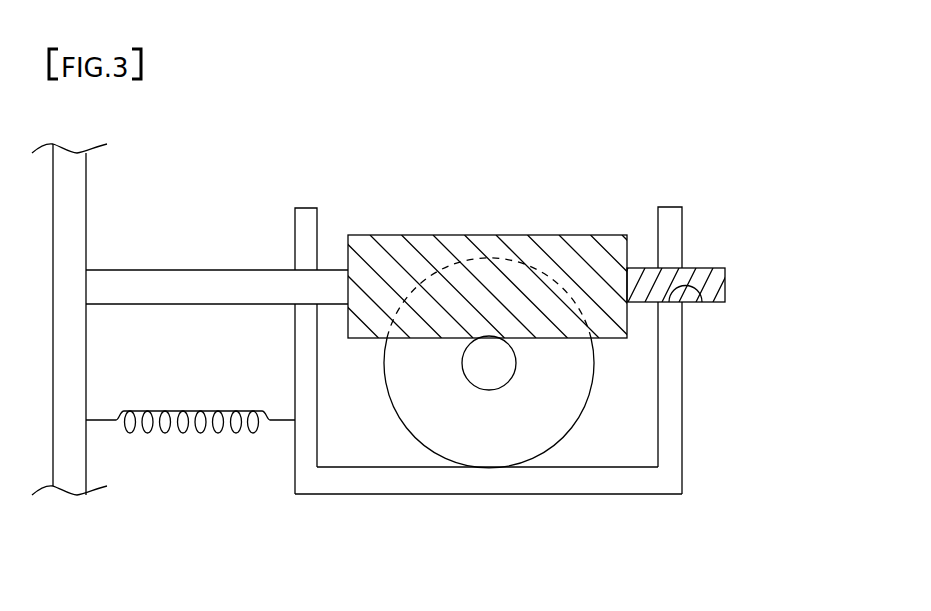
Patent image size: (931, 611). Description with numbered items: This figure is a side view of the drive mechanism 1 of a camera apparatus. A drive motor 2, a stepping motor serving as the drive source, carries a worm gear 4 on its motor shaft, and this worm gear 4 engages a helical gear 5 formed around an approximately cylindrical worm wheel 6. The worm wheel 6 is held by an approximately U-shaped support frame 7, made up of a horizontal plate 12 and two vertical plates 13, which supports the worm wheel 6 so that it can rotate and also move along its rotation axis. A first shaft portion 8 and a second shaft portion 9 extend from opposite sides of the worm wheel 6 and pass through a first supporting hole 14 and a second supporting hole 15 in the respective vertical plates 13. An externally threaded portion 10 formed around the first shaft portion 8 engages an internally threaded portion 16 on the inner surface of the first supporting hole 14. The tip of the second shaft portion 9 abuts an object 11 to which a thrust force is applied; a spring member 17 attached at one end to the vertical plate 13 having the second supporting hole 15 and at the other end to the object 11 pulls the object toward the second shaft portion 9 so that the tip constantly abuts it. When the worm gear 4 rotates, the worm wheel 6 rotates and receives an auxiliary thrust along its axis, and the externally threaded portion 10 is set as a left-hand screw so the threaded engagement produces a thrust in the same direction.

The drive mechanism 1 is at (640, 94).
The drive motor 2 is at (565, 436).
The worm gear 4 is at (488, 390).
The helical gear 5 is at (508, 253).
The worm wheel 6 is at (442, 226).
The support frame 7 is at (510, 366).
The first shaft portion 8 is at (717, 265).
The second shaft portion 9 is at (191, 270).
The externally threaded portion 10 is at (717, 285).
The object 11 is at (87, 165).
The horizontal plate 12 is at (445, 495).
The vertical plate 13 is at (510, 328).
The first supporting hole 14 is at (681, 267).
The second supporting hole 15 is at (328, 267).
The internally threaded portion 16 is at (702, 299).
The spring member 17 is at (181, 433).